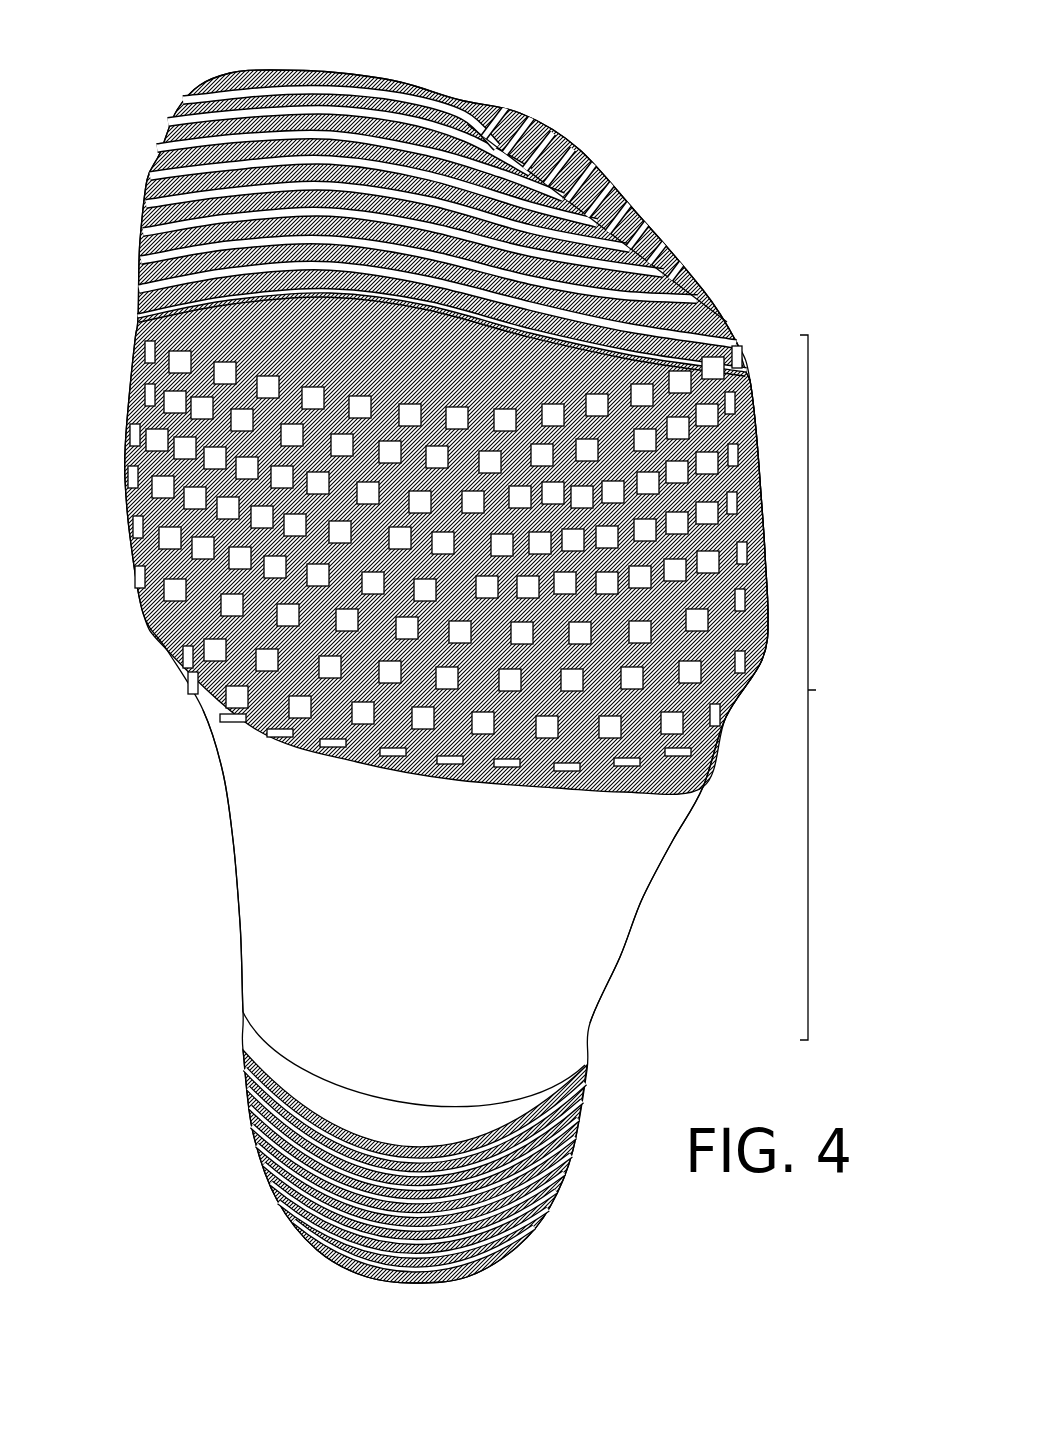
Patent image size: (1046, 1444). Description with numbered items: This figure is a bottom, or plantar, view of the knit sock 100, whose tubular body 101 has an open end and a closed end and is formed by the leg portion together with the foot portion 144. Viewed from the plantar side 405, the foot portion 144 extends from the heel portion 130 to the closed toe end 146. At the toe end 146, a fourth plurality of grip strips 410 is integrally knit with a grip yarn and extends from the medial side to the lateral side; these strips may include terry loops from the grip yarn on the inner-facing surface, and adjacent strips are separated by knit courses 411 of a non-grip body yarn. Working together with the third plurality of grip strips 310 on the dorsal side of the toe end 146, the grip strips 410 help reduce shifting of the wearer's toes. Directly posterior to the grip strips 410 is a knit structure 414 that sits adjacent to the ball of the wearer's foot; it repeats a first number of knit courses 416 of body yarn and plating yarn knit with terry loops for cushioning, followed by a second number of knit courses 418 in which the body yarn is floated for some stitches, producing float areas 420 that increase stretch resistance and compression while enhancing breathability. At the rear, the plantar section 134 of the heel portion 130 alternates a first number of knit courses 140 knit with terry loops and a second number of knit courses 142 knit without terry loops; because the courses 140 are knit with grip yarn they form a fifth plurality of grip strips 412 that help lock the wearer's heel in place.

The knit sock 100 is at (829, 239).
The tubular body 101 is at (871, 374).
The heel portion 130 is at (204, 1216).
The plantar section 134 is at (228, 1040).
The first number of knit courses 140 is at (548, 1192).
The second number of knit courses 142 is at (530, 1230).
The foot portion 144 is at (833, 687).
The toe end 146 is at (143, 97).
The third plurality of grip strips 310 is at (527, 113).
The plantar side 405 is at (463, 934).
The fourth plurality of grip strips 410 is at (593, 277).
The knit courses 411 is at (178, 112).
The fifth plurality of grip strips 412 is at (477, 1253).
The knit structure 414 is at (106, 579).
The first number of knit courses 416 is at (118, 489).
The second number of knit courses 418 is at (118, 462).
The float areas 420 is at (225, 600).